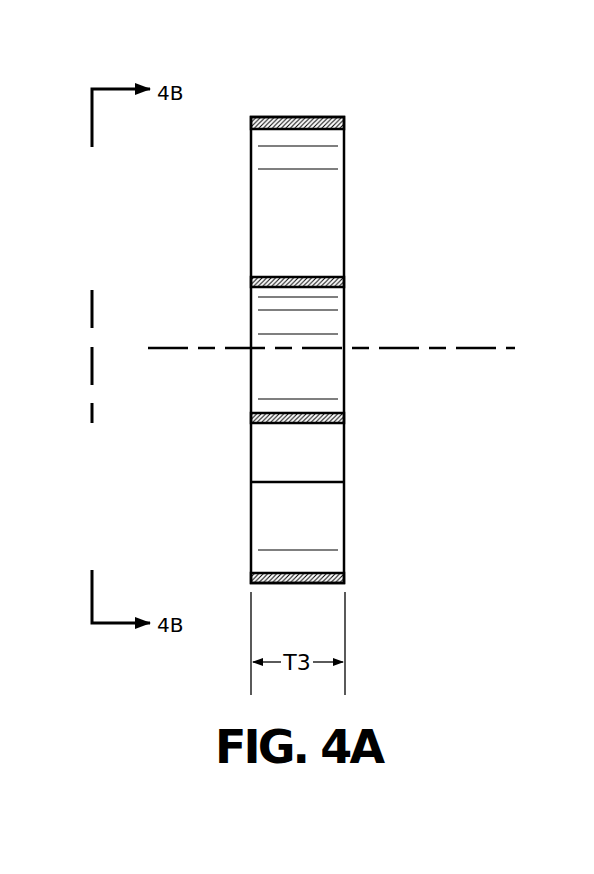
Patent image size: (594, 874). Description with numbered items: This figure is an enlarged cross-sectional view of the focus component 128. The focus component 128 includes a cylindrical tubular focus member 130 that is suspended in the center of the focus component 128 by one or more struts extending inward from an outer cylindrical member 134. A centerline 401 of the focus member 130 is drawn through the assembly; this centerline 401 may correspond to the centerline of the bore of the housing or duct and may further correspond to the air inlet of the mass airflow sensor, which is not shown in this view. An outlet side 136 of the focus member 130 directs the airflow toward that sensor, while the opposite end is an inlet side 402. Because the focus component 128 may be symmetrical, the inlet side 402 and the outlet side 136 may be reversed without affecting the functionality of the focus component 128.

The focus component 128 is at (190, 43).
The outer cylindrical member 134 is at (305, 117).
The cylindrical tubular focus member 130 is at (345, 276).
The outlet side 136 is at (361, 393).
The inlet side 402 is at (214, 403).
The centerline 401 is at (395, 348).